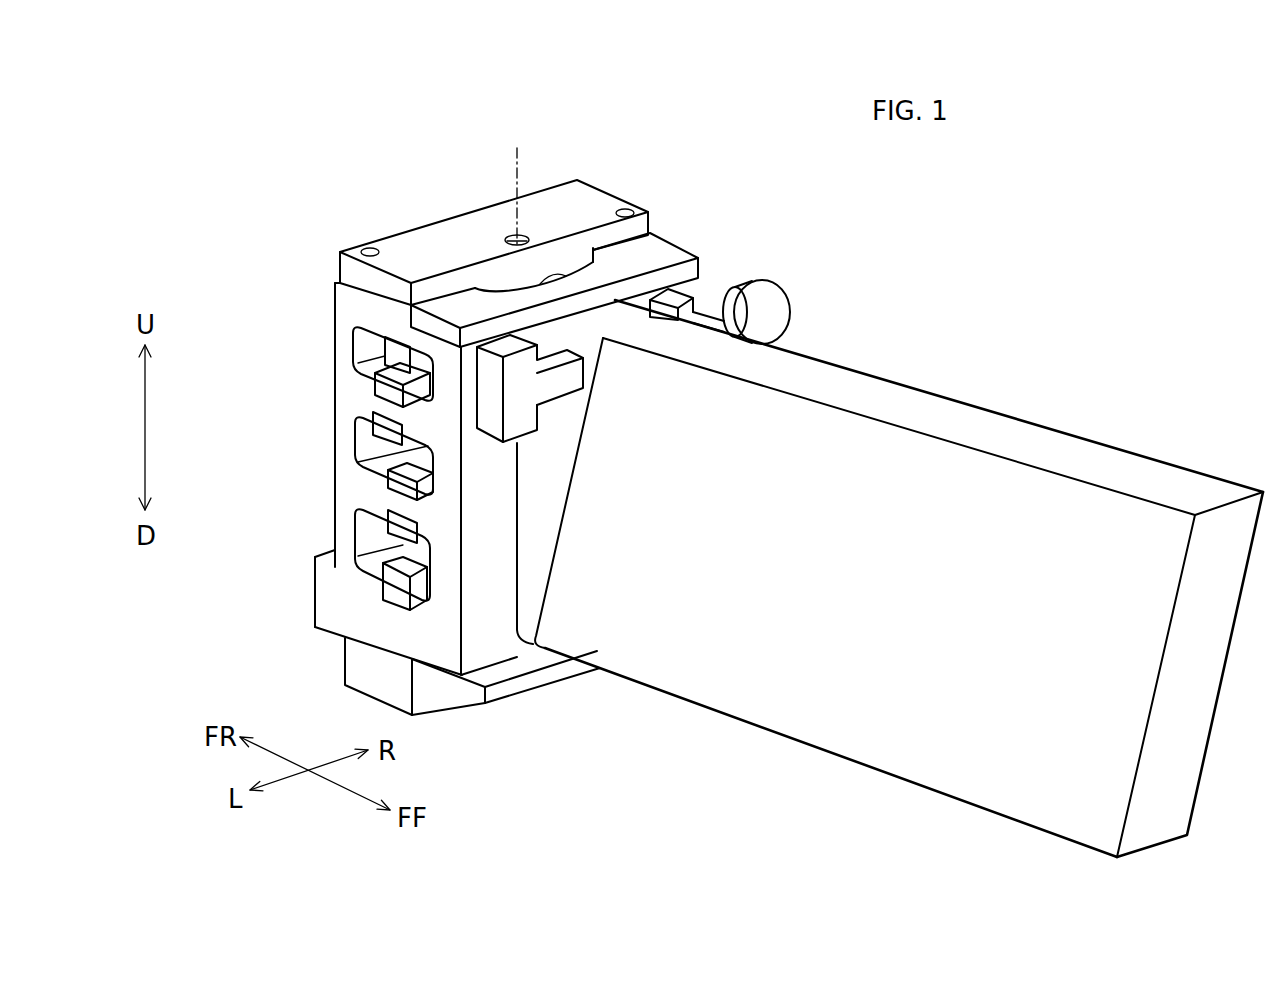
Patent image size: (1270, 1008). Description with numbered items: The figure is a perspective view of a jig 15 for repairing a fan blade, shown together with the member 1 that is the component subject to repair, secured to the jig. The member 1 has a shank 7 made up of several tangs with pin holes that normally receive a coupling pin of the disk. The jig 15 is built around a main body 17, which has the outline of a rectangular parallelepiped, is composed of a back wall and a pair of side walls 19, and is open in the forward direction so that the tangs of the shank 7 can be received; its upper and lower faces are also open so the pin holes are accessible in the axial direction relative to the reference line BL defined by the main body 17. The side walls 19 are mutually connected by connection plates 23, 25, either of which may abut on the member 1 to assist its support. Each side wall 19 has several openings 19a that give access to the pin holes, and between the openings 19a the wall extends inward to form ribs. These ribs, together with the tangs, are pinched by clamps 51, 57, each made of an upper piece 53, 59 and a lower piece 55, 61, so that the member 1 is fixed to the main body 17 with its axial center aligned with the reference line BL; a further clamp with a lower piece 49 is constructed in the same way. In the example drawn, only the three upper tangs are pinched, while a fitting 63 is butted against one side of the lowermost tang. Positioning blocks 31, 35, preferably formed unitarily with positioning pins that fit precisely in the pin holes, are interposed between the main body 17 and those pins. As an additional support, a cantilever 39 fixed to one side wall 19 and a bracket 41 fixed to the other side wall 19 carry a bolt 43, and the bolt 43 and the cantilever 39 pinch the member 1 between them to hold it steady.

The member 1 is at (997, 397).
The shank 7 is at (563, 418).
The jig 15 is at (427, 148).
The main body 17 is at (333, 290).
The side wall 19 is at (342, 310).
The opening 19a is at (364, 354).
The connection plate 23 is at (666, 246).
The connection plate 25 is at (525, 685).
The positioning block 31 is at (425, 234).
The positioning block 35 is at (353, 670).
The cantilever 39 is at (565, 383).
The bracket 41 is at (707, 276).
The bolt 43 is at (767, 283).
The lower piece 49 is at (383, 348).
The clamp 51 is at (252, 370).
The upper piece 53 is at (383, 377).
The lower piece 55 is at (373, 422).
The clamp 57 is at (252, 480).
The upper piece 59 is at (386, 478).
The lower piece 61 is at (388, 528).
The fitting 63 is at (383, 592).
The reference line BL is at (528, 149).